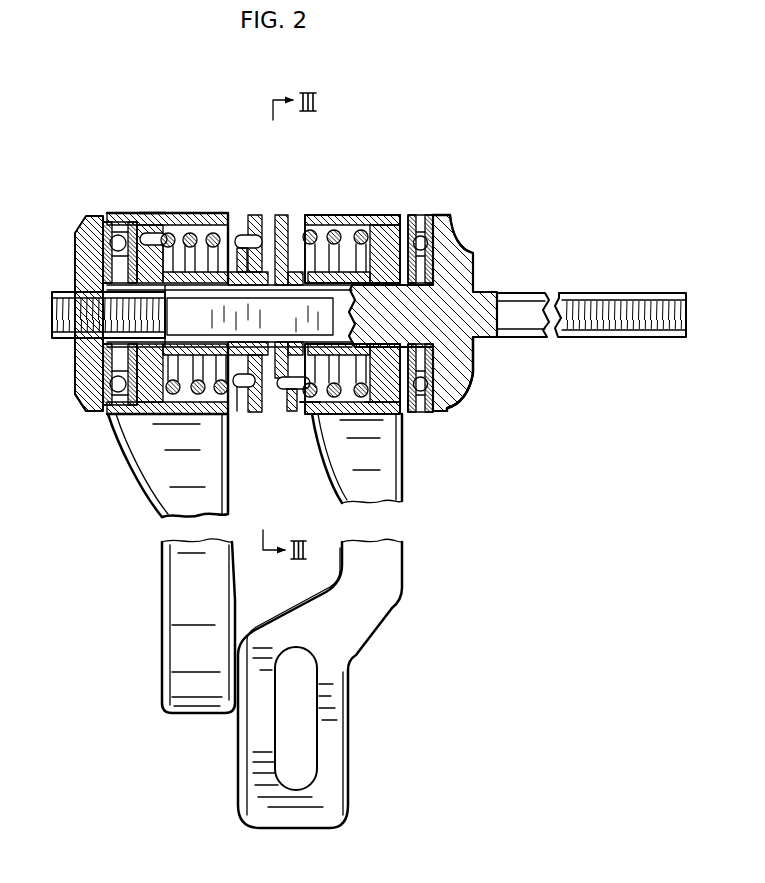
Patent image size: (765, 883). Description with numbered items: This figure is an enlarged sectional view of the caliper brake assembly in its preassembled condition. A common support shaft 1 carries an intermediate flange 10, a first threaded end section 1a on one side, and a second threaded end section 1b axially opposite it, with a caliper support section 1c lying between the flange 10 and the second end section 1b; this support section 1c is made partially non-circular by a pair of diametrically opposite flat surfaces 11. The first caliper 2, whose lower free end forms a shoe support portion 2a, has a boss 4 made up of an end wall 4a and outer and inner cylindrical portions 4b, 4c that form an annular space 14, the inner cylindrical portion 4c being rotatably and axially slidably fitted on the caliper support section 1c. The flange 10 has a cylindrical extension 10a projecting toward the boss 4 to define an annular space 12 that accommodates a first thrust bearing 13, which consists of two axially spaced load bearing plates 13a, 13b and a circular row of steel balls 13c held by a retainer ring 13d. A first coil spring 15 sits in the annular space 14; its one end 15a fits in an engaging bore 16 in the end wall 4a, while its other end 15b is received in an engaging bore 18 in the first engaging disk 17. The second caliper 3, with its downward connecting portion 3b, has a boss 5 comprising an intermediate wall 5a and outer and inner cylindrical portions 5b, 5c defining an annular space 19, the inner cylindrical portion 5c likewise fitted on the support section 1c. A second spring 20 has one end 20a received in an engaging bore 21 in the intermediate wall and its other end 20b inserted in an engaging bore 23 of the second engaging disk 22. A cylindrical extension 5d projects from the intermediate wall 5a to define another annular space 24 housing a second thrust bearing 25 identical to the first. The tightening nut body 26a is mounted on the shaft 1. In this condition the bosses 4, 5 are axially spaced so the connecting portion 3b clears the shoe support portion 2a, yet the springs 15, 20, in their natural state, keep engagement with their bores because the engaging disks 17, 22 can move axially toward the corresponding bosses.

The support shaft 1 is at (523, 290).
The first threaded end section 1a is at (619, 292).
The second threaded end section 1b is at (72, 312).
The caliper support section 1c is at (463, 218).
The first caliper 2 is at (405, 563).
The shoe support portion 2a is at (338, 710).
The second caliper 3 is at (160, 563).
The connecting portion 3b is at (170, 650).
The boss 4 is at (379, 208).
The end wall 4a is at (402, 215).
The outer cylindrical portion 4b is at (350, 215).
The inner cylindrical portion 4c is at (393, 215).
The boss 5 is at (167, 208).
The intermediate wall 5a is at (118, 420).
The outer cylindrical portion 5b is at (192, 420).
The inner cylindrical portion 5c is at (150, 422).
The cylindrical extension 5d is at (123, 210).
The intermediate flange 10 is at (470, 232).
The cylindrical extension 10a is at (437, 213).
The flat surfaces 11 is at (270, 348).
The annular space 12 is at (418, 215).
The first thrust bearing 13 is at (565, 355).
The load bearing plate 13a is at (438, 357).
The load bearing plate 13b is at (434, 370).
The steel balls 13c is at (418, 382).
The retainer ring 13d is at (421, 410).
The annular space 14 is at (332, 215).
The first coil spring 15 is at (305, 215).
The spring end 15a is at (377, 415).
The spring end 15b is at (305, 416).
The engaging bore 16 is at (418, 412).
The first engaging disk 17 is at (285, 213).
The engaging bore 18 is at (292, 412).
The annular space 19 is at (182, 212).
The second spring 20 is at (210, 212).
The spring end 20a is at (150, 212).
The spring end 20b is at (241, 212).
The engaging bore 21 is at (155, 212).
The second engaging disk 22 is at (252, 413).
The engaging bore 23 is at (248, 212).
The annular space 24 is at (115, 212).
The second thrust bearing 25 is at (98, 270).
The tightening nut body 26a is at (80, 368).